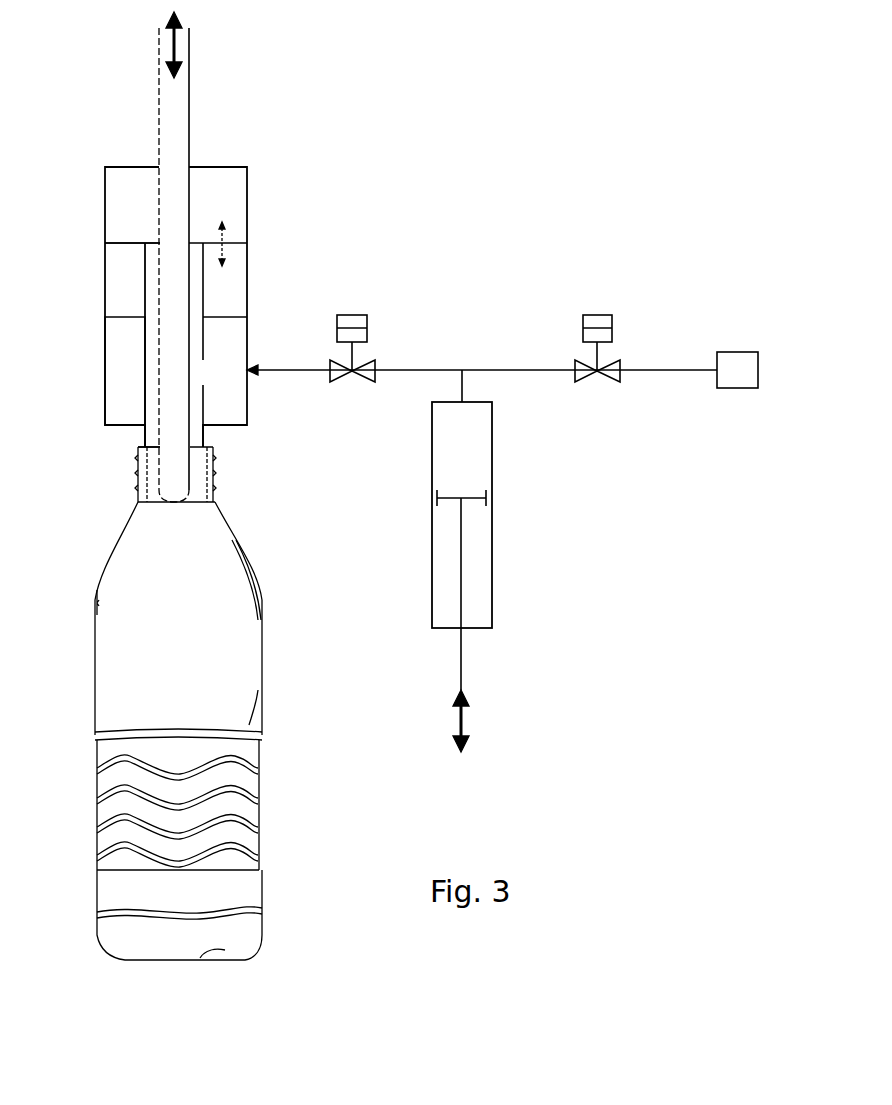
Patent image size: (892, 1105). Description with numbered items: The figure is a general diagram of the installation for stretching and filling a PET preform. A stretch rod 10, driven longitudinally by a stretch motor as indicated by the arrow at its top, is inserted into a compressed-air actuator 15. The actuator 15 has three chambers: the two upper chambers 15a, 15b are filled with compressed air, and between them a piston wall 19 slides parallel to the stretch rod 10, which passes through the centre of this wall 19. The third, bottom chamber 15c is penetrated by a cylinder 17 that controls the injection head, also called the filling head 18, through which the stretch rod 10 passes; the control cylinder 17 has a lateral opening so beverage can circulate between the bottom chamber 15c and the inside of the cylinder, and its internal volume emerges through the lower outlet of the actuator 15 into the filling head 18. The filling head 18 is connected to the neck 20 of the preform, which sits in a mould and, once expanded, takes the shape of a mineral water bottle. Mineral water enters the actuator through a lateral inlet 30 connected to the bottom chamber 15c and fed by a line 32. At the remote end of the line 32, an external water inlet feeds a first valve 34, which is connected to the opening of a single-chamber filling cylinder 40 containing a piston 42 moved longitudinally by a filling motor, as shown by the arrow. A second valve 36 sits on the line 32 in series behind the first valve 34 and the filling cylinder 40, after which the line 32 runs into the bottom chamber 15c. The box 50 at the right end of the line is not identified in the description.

The stretch rod 10 is at (186, 47).
The compressed-air actuator 15 is at (183, 307).
The upper chamber 15a is at (149, 209).
The upper chamber 15b is at (143, 289).
The bottom chamber 15c is at (143, 380).
The cylinder 17 is at (140, 347).
The injection head 18 is at (140, 432).
The piston wall 19 is at (120, 241).
The neck 20 is at (216, 462).
The lateral inlet 30 is at (252, 369).
The line 32 is at (420, 370).
The first valve 34 is at (597, 316).
The second valve 36 is at (352, 316).
The filling cylinder 40 is at (477, 446).
The piston 42 is at (462, 553).
The pressure source 50 is at (735, 352).